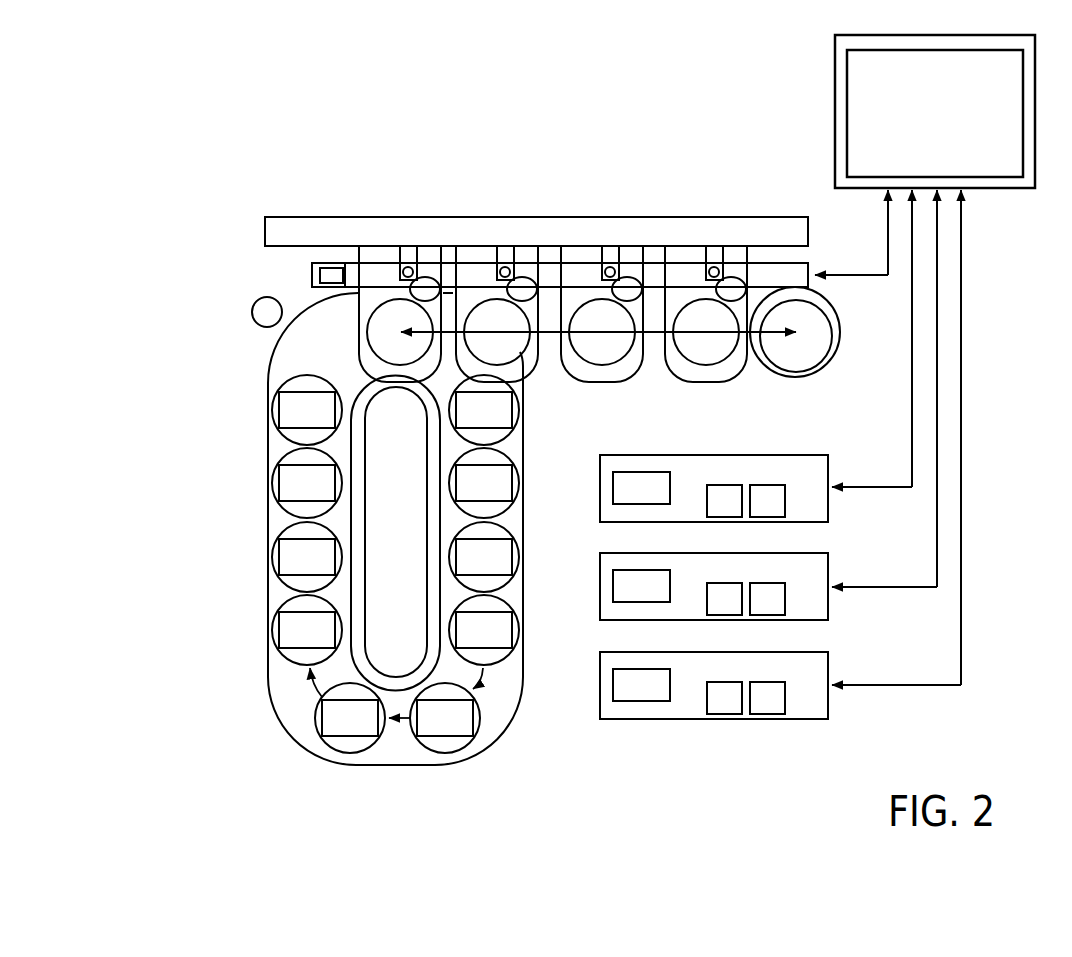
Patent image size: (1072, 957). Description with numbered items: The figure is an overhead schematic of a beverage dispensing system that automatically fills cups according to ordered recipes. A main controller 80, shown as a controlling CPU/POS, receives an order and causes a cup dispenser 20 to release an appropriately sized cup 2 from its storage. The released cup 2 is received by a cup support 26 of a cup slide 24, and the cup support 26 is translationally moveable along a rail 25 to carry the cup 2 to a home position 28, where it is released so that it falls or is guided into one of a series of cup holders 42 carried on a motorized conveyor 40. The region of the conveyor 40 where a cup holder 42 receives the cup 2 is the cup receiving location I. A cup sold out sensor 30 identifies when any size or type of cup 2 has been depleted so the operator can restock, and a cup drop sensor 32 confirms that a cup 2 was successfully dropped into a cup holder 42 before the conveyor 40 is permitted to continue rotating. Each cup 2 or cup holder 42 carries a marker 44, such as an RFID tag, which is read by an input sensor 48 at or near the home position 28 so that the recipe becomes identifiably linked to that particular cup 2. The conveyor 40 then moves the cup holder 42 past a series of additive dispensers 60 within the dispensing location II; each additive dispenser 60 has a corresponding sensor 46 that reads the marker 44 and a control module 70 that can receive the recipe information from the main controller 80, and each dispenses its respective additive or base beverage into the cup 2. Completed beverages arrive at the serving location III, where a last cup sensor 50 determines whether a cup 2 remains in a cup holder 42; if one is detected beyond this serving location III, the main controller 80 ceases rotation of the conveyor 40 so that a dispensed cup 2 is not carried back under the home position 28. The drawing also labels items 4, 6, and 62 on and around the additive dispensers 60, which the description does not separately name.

The cup 2 is at (383, 322).
The dispensing station 4 is at (739, 452).
The dispenser array 6 is at (706, 602).
The cup dispenser 20 is at (754, 211).
The cup slide 24 is at (847, 342).
The rail 25 is at (801, 266).
The cup support 26 is at (825, 355).
The home position 28 is at (322, 272).
The cup sold out sensor 30 is at (436, 276).
The cup drop sensor 32 is at (386, 280).
The motorized conveyor 40 is at (278, 450).
The cup holder 42 is at (287, 577).
The marker 44 is at (283, 631).
The sensor 46 is at (641, 471).
The input sensor 48 is at (352, 354).
The last cup sensor 50 is at (257, 296).
The additive dispenser 60 is at (599, 502).
The display 62 is at (724, 600).
The control module 70 is at (767, 600).
The main controller 80 is at (935, 50).
The cup receiving location I is at (443, 314).
The dispensing location II is at (533, 698).
The serving location III is at (232, 706).